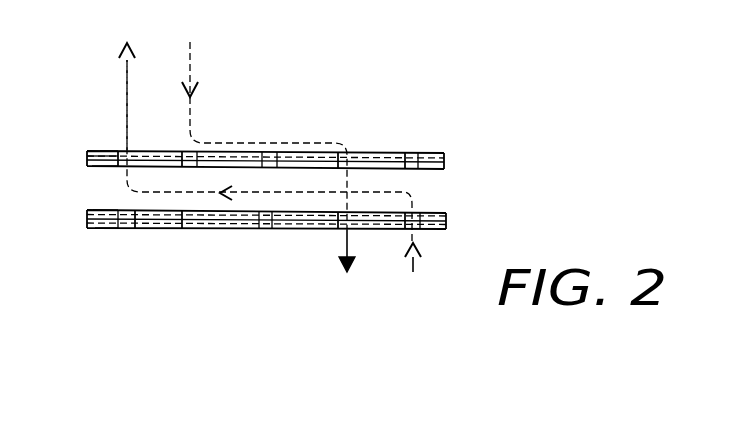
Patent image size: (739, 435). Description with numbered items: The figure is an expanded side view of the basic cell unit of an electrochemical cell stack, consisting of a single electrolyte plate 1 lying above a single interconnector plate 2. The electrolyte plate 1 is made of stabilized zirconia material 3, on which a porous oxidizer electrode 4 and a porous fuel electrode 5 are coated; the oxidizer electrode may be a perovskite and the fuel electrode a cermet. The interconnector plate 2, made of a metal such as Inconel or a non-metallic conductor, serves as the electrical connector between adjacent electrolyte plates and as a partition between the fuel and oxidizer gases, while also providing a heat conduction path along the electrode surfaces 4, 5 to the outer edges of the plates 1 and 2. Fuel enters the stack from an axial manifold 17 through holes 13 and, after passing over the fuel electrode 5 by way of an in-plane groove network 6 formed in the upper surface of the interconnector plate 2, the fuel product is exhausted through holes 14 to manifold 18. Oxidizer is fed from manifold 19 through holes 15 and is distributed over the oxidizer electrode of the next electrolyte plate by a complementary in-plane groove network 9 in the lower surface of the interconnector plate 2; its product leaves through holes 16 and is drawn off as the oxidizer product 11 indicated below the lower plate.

The electrolyte plate 1 is at (455, 160).
The interconnector plate 2 is at (452, 222).
The stabilized zirconia material 3 is at (87, 156).
The porous oxidizer electrode 4 is at (100, 150).
The porous fuel electrode 5 is at (92, 166).
The in-plane groove network 6 is at (93, 210).
The complementary in-plane groove network 9 is at (95, 228).
The oxidizer product 11 is at (339, 287).
The holes 13 is at (406, 152).
The holes 14 is at (133, 150).
The holes 15 is at (195, 148).
The holes 16 is at (342, 151).
The manifold 17 is at (292, 202).
The manifold 18 is at (102, 75).
The manifold 19 is at (257, 115).